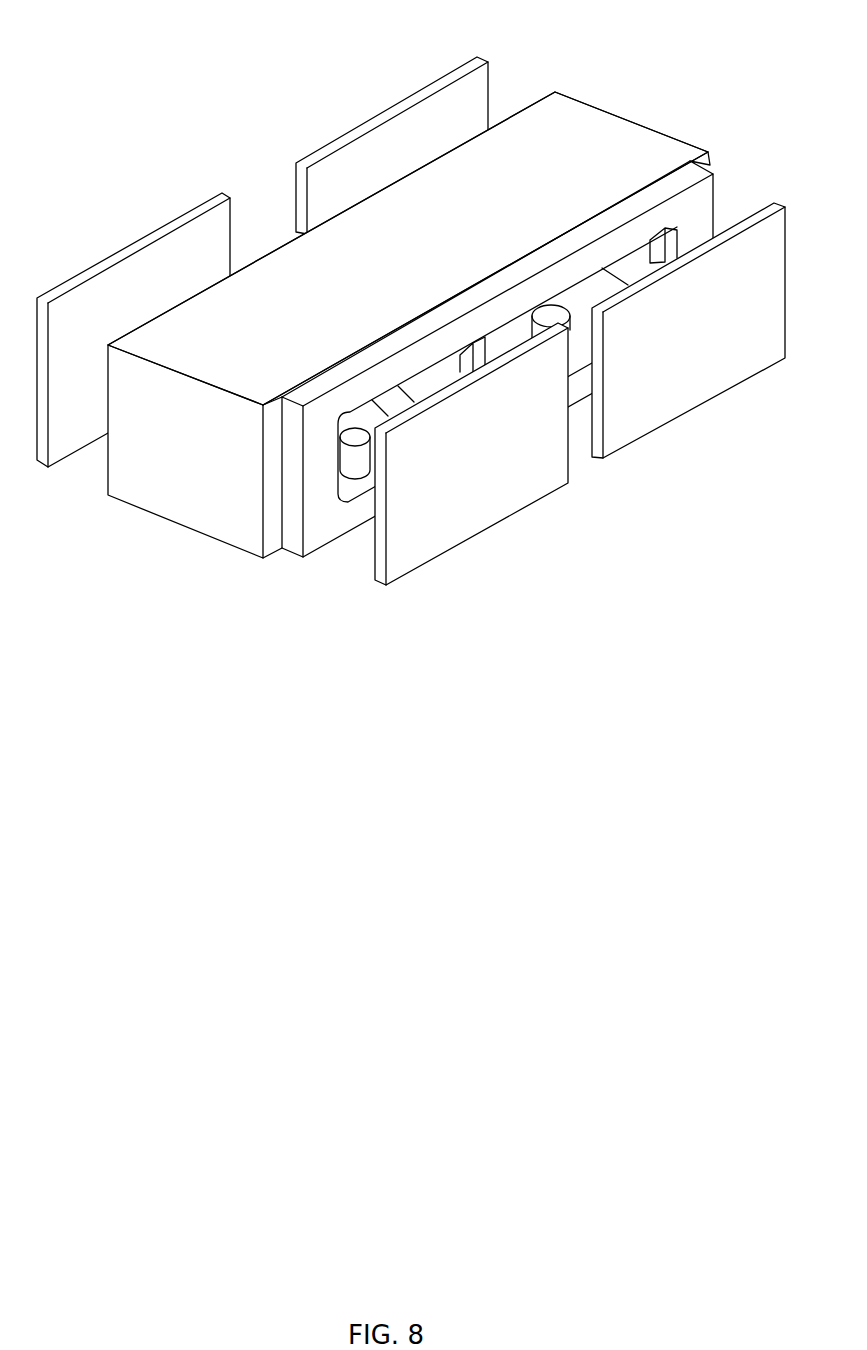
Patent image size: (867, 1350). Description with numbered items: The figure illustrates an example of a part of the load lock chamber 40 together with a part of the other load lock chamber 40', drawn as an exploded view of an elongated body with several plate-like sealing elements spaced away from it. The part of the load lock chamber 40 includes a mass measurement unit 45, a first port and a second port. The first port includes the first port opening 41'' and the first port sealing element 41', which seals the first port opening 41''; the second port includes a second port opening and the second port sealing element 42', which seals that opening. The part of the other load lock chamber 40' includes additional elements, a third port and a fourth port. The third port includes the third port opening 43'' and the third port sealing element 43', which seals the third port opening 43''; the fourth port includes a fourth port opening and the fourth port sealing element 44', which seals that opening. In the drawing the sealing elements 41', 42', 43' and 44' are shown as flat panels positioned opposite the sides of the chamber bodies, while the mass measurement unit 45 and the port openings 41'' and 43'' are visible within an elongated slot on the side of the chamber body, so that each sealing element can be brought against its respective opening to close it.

The load lock chamber 40 is at (424, 213).
The other load lock chamber 40' is at (401, 345).
The first port sealing element 41' is at (688, 330).
The first port opening 41'' is at (680, 227).
The second port sealing element 42' is at (392, 145).
The third port sealing element 43' is at (471, 454).
The third port opening 43'' is at (338, 480).
The fourth port sealing element 44' is at (133, 330).
The mass measurement unit 45 is at (580, 303).